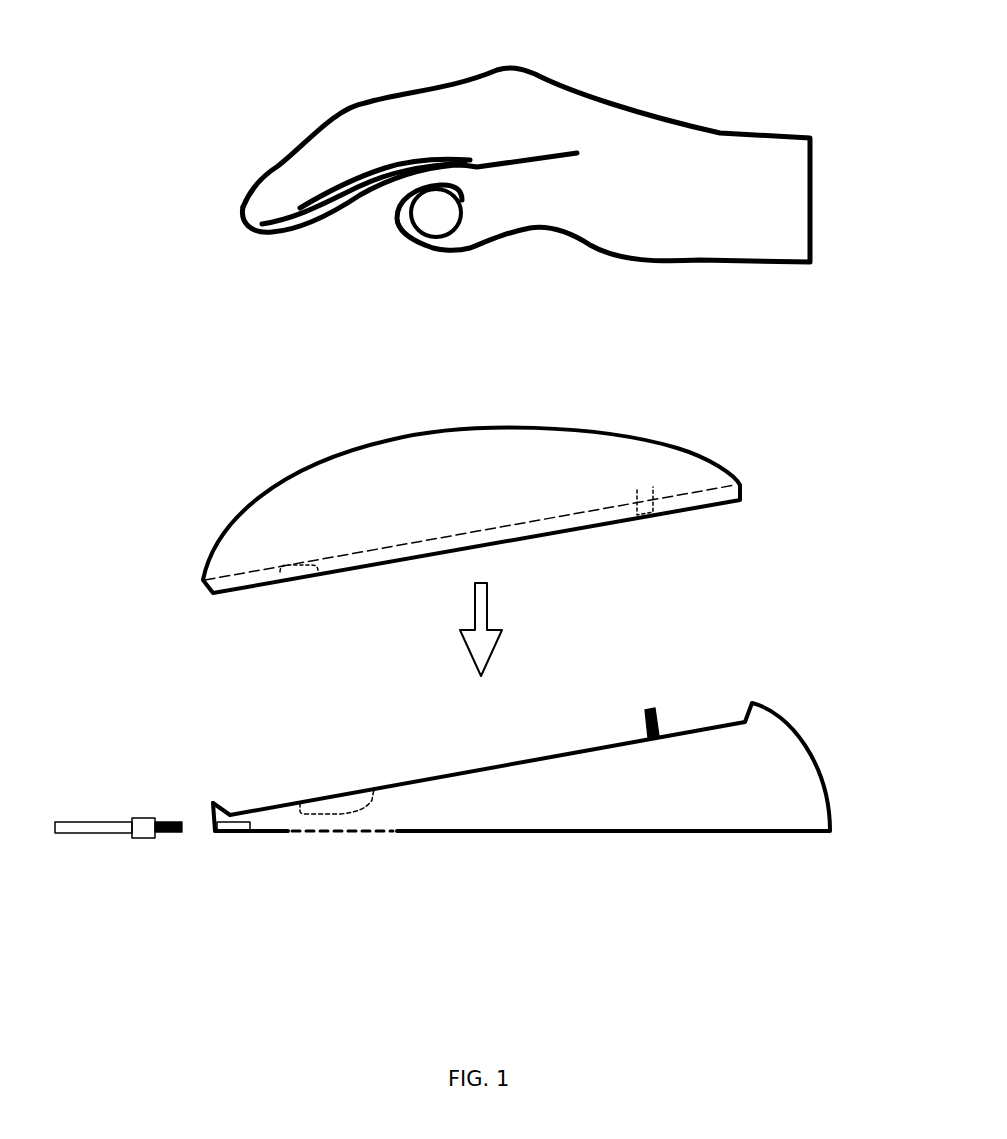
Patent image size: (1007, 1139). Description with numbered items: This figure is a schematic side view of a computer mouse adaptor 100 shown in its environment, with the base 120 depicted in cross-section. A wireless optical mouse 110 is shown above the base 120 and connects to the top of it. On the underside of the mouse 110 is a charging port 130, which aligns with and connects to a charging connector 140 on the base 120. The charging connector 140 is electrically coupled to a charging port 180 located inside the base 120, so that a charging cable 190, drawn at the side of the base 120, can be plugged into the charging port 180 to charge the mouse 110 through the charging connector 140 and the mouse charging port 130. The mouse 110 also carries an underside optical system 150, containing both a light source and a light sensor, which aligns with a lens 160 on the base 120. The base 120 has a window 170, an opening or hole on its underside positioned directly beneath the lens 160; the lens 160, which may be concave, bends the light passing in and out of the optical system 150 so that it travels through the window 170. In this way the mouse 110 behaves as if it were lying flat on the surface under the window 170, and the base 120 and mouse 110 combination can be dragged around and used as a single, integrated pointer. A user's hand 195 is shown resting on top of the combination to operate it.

The computer mouse adaptor 100 is at (184, 722).
The wireless optical mouse 110 is at (662, 450).
The base 120 is at (811, 749).
The underside charging port 130 is at (640, 492).
The charging connector 140 is at (657, 717).
The underside optical system 150 is at (300, 566).
The lens 160 is at (355, 792).
The window 170 is at (352, 837).
The charging port 180 is at (233, 832).
The charging cable 190 is at (145, 840).
The hand 195 is at (532, 74).